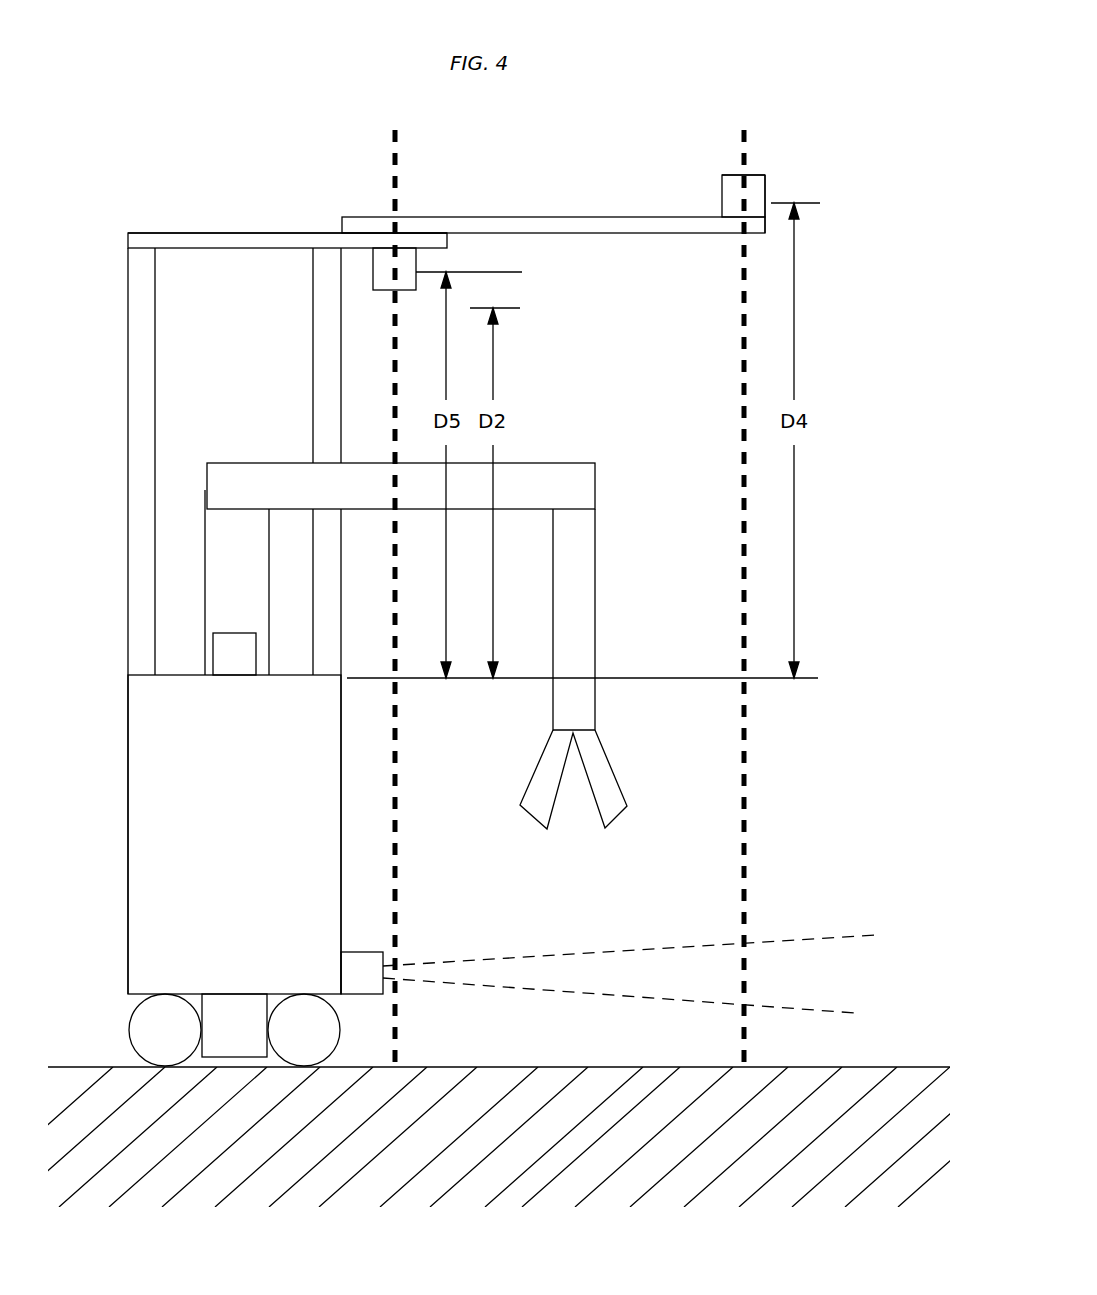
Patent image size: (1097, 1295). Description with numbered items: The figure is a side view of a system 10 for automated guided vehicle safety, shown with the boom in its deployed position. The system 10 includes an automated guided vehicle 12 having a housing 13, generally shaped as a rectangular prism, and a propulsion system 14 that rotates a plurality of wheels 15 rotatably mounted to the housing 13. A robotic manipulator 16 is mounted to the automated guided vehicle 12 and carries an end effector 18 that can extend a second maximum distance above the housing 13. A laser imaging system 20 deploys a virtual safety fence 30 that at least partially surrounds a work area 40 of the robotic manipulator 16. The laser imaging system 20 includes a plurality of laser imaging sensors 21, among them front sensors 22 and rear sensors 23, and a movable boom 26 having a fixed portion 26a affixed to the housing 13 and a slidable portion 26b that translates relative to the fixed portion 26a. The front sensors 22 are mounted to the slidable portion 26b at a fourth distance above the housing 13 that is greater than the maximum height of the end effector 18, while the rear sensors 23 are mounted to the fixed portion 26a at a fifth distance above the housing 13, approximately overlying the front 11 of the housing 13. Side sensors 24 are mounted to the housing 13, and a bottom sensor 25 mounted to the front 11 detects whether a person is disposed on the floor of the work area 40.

The system 10 is at (185, 185).
The front 11 is at (341, 863).
The automated guided vehicle 12 is at (128, 768).
The housing 13 is at (128, 850).
The propulsion system 14 is at (237, 995).
The wheels 15 is at (167, 995).
The robotic manipulator 16 is at (527, 467).
The end effector 18 is at (616, 818).
The laser imaging system 20 is at (723, 197).
The laser imaging sensors 21 is at (765, 190).
The front sensors 22 is at (768, 175).
The rear sensors 23 is at (416, 262).
The side sensors 24 is at (235, 633).
The bottom sensor 25 is at (383, 958).
The movable boom 26 is at (223, 250).
The fixed portion 26a is at (322, 232).
The slidable portion 26b is at (555, 216).
The virtual safety fence 30 is at (393, 402).
The work area 40 is at (628, 340).